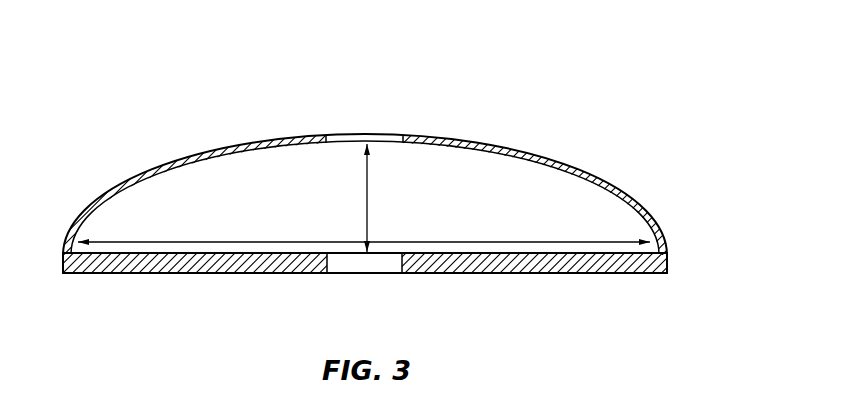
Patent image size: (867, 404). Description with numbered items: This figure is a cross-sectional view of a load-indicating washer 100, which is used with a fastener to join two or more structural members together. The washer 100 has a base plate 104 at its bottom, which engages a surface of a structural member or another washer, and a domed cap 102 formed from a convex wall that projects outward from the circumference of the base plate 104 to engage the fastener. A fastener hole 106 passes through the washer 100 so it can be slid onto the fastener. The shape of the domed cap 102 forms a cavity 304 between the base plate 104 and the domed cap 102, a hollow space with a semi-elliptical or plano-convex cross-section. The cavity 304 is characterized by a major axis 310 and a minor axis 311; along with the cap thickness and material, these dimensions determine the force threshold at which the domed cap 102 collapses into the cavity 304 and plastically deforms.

The load-indicating washer 100 is at (392, 215).
The domed cap 102 is at (535, 154).
The base plate 104 is at (192, 275).
The fastener hole 106 is at (382, 126).
The cavity 304 is at (140, 204).
The major axis 310 is at (230, 241).
The minor axis 311 is at (368, 196).